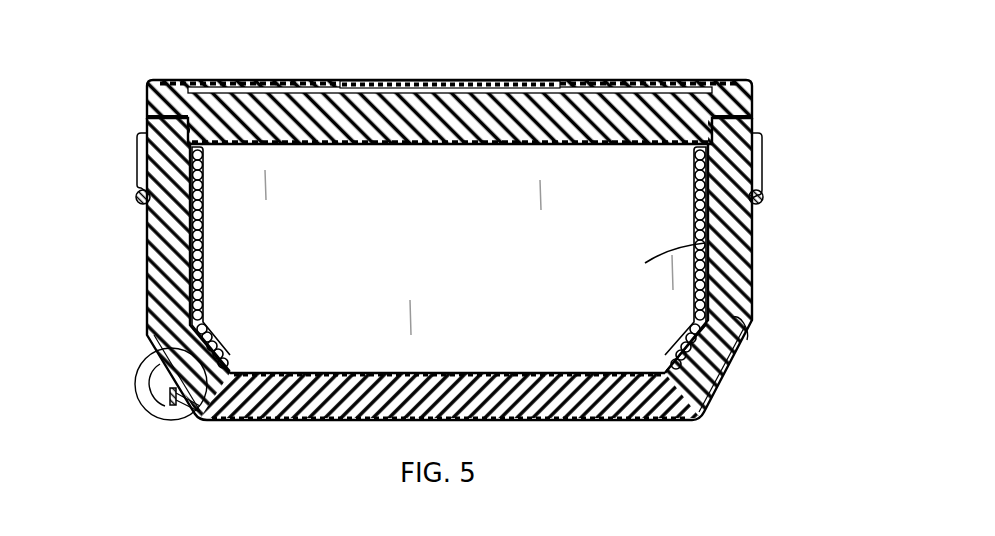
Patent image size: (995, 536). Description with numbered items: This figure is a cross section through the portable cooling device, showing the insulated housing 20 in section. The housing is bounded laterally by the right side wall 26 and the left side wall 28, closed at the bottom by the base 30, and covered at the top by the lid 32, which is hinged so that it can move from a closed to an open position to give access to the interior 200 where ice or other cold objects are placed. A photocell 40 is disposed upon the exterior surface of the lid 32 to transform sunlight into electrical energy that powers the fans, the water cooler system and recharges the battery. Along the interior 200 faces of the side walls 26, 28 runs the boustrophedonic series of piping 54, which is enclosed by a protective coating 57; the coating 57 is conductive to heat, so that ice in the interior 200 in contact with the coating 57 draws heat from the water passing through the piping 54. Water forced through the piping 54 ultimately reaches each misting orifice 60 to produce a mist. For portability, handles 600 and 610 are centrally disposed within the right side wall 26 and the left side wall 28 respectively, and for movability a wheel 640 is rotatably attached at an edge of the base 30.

The insulated housing 20 is at (118, 100).
The lid 32 is at (680, 80).
The photocell 40 is at (460, 80).
The left side wall 28 is at (146, 278).
The right side wall 26 is at (757, 275).
The base 30 is at (344, 422).
The protective coating 57 is at (208, 228).
The interior 200 is at (740, 248).
The piping 54 is at (748, 308).
The handle 610 is at (140, 150).
The handle 600 is at (760, 160).
The wheel 640 is at (142, 375).
The misting orifice 60 is at (176, 400).